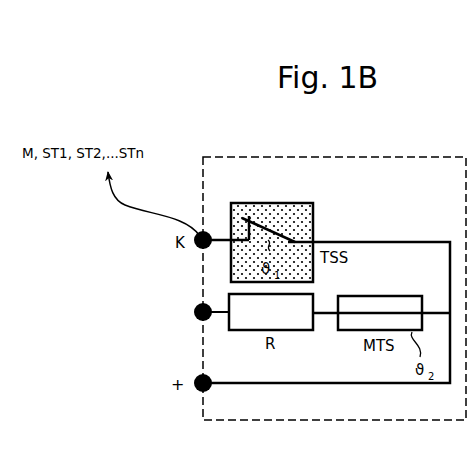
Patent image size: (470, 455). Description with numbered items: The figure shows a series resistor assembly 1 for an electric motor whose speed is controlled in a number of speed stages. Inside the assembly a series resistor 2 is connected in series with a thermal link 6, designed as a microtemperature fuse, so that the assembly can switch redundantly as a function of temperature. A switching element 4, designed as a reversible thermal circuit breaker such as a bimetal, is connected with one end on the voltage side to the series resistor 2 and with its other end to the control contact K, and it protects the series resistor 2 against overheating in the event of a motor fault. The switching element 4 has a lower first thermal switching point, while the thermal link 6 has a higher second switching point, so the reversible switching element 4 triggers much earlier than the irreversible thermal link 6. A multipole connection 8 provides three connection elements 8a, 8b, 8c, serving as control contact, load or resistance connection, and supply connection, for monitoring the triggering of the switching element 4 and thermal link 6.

The series resistor assembly 1 is at (415, 157).
The series resistor 2 is at (295, 330).
The switching element 4 is at (313, 213).
The thermal link 6 is at (398, 296).
The multipole connection 8 is at (173, 339).
The connection element 8a is at (198, 248).
The connection element 8b is at (194, 312).
The connection element 8c is at (200, 376).